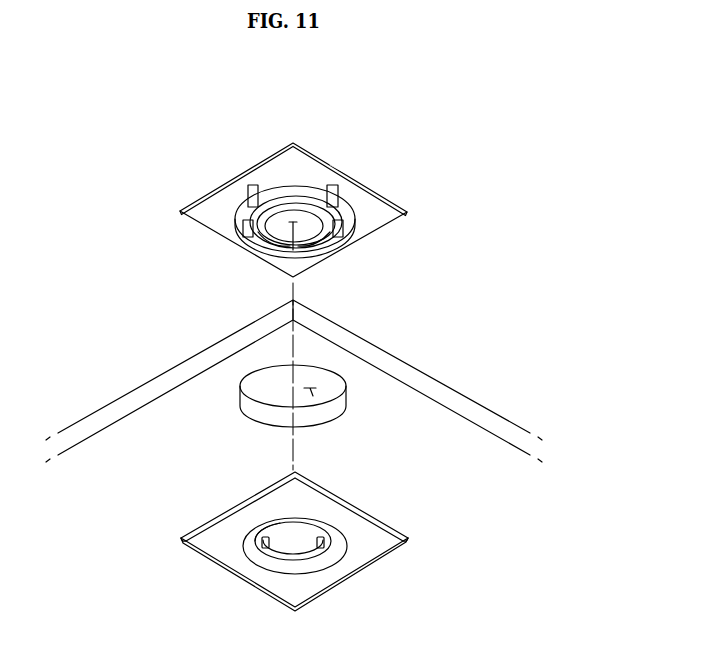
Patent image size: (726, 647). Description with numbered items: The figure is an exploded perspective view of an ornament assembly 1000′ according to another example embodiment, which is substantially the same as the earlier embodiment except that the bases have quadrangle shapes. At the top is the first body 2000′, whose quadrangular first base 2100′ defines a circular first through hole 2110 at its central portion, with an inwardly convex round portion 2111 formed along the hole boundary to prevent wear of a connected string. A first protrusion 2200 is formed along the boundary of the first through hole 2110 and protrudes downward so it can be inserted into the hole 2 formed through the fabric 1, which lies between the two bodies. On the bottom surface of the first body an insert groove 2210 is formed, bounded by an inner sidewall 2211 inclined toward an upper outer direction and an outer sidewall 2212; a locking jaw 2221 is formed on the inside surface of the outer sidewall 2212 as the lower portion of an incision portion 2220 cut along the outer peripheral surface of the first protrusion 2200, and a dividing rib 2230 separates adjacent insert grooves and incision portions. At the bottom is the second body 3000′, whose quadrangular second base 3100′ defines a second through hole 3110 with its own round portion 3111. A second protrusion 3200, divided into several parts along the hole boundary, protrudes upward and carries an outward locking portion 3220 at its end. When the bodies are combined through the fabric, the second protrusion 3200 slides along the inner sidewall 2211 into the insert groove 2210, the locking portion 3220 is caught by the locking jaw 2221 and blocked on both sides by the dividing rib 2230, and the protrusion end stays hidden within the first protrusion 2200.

The ornament assembly 1000′ is at (64, 92).
The first body 2000′ is at (292, 142).
The first base 2100′ is at (358, 172).
The inner sidewall 2211 is at (398, 200).
The first protrusion 2200 is at (240, 212).
The dividing rib 2230 is at (252, 199).
The incision portion 2220 is at (328, 184).
The locking jaw 2221 is at (250, 187).
The outer sidewall 2212 is at (353, 242).
The insert groove 2210 is at (236, 246).
The round portion 2111 is at (268, 256).
The first through hole 2110 is at (338, 256).
The fabric 1 is at (158, 386).
The hole 2 is at (330, 398).
The second body 3000′ is at (377, 572).
The second base 3100′ is at (400, 546).
The round portion 3111 is at (336, 560).
The second through hole 3110 is at (295, 534).
The second protrusion 3200 is at (290, 560).
The locking portion 3220 is at (262, 541).